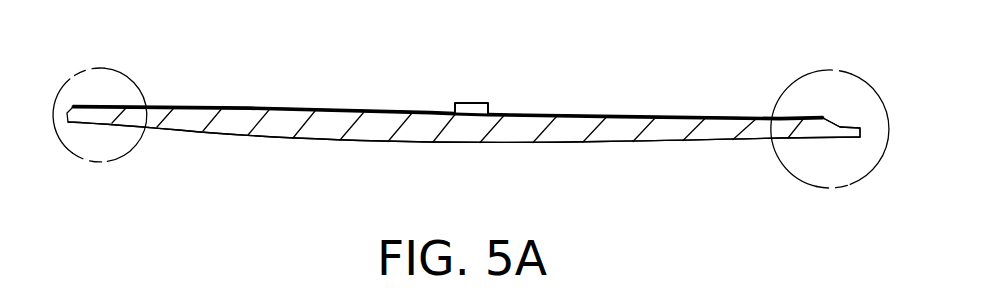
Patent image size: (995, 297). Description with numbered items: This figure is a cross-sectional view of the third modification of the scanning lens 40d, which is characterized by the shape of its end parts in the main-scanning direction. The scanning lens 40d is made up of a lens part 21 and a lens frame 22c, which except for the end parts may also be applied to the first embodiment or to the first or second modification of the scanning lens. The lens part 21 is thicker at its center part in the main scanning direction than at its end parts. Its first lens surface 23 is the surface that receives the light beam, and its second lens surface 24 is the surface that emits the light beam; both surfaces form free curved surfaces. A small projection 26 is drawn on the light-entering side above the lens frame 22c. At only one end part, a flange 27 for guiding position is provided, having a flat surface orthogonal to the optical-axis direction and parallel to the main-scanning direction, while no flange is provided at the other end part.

The scanning lens 40d is at (236, 80).
The lens part 21 is at (643, 140).
The lens frame 22c is at (624, 115).
The first lens surface 23 is at (532, 100).
The second lens surface 24 is at (538, 142).
The projection 26 is at (475, 103).
The flange 27 is at (840, 128).